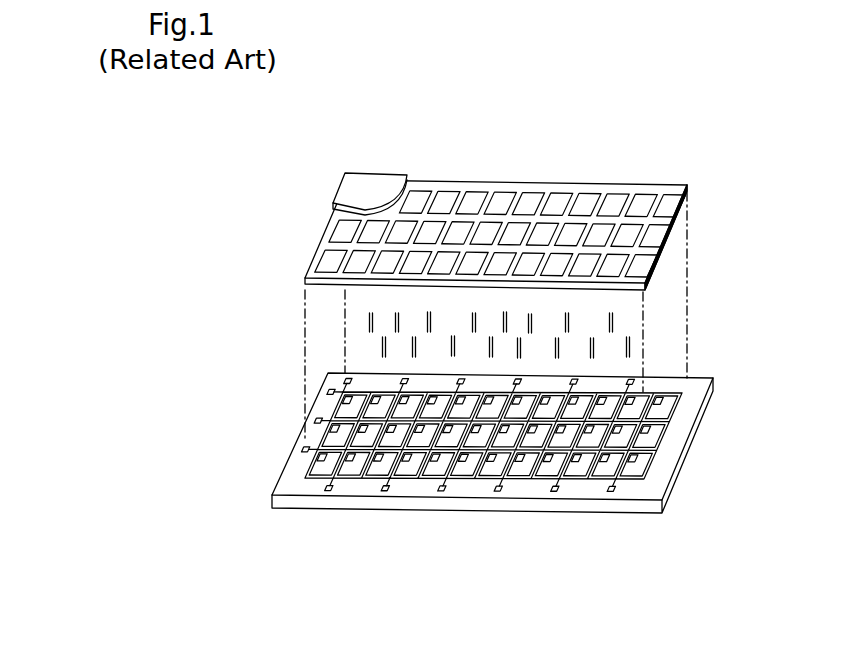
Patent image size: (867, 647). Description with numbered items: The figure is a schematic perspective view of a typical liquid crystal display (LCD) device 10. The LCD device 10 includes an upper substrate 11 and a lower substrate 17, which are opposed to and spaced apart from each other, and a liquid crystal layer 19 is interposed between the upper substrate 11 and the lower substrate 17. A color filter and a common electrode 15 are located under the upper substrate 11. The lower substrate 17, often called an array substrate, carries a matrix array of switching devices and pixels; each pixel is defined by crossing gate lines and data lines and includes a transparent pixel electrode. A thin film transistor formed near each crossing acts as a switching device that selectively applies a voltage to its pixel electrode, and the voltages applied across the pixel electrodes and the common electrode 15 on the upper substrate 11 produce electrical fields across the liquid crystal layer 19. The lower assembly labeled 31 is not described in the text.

The liquid crystal display device 10 is at (513, 143).
The upper substrate 11 is at (599, 180).
The common electrode 15 is at (646, 289).
The lower substrate 17 is at (716, 384).
The liquid crystal layer 19 is at (632, 346).
The array panel 31 is at (503, 540).